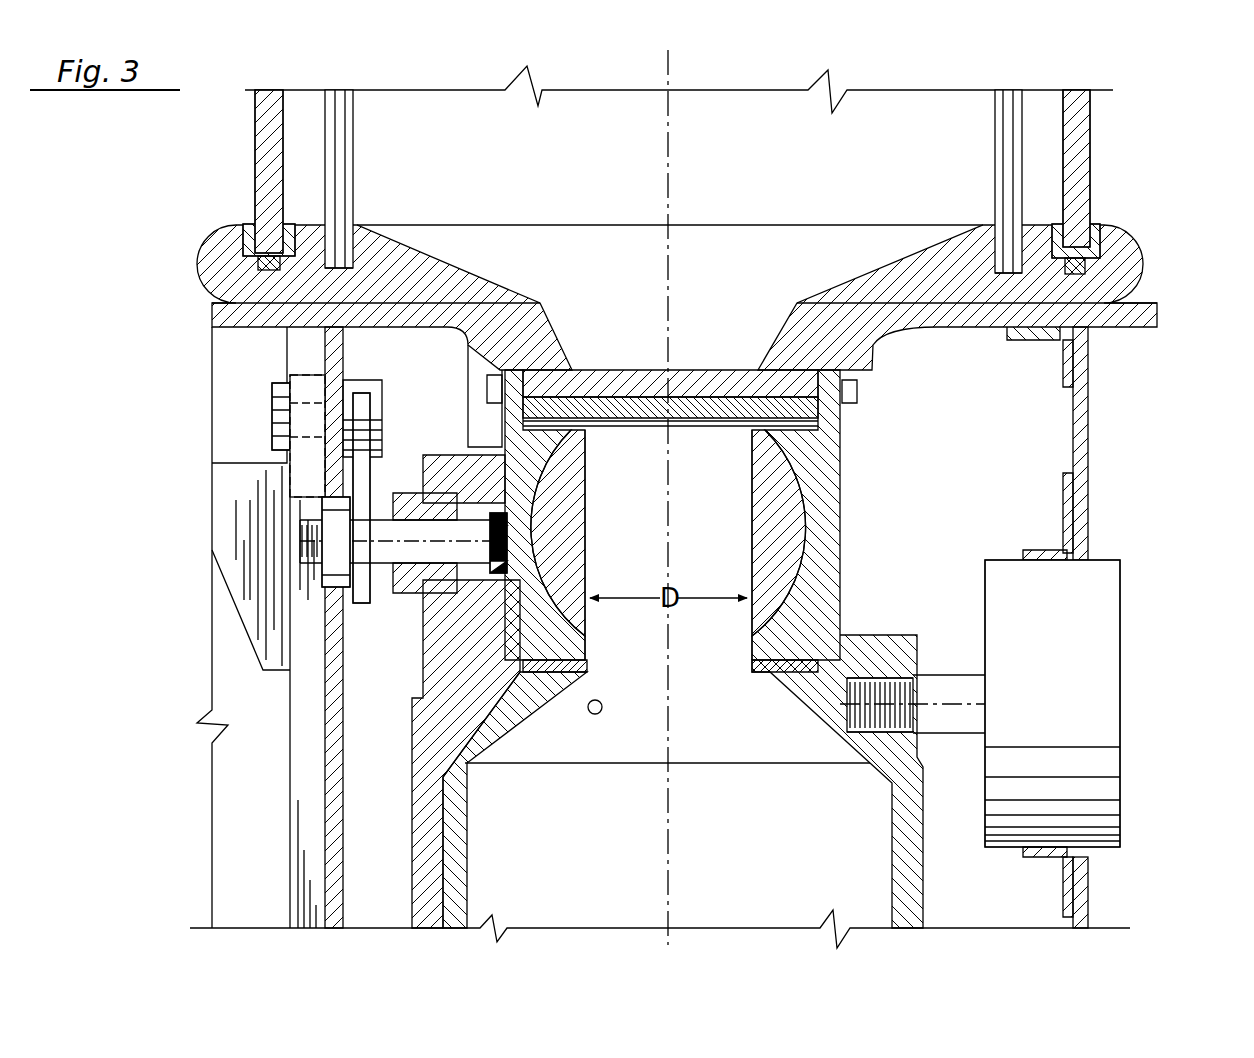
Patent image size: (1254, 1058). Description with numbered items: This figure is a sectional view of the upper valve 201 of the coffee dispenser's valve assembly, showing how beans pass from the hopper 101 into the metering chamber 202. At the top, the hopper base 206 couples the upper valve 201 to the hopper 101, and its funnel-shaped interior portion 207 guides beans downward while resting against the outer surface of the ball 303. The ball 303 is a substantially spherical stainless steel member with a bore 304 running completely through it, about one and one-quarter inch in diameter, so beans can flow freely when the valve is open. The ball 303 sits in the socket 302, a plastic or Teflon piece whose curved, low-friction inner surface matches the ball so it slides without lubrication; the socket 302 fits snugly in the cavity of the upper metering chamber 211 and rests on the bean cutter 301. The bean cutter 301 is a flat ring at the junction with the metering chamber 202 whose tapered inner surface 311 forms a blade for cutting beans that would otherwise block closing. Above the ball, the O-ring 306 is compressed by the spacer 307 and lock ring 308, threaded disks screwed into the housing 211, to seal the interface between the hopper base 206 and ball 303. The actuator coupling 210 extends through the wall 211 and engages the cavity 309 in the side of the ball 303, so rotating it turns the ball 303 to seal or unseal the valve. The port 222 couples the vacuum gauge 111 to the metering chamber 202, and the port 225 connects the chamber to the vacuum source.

The hopper 101 is at (1090, 168).
The vacuum gauge 111 is at (1120, 630).
The upper valve 201 is at (186, 394).
The metering chamber 202 is at (773, 862).
The hopper base 206 is at (1143, 262).
The funnel-shaped interior portion 207 is at (767, 279).
The actuator coupling 210 is at (382, 530).
The upper metering chamber 211 is at (437, 635).
The port 222 is at (955, 672).
The port 225 is at (595, 714).
The bean cutter 301 is at (778, 680).
The socket 302 is at (825, 600).
The ball 303 is at (822, 515).
The bore 304 is at (653, 542).
The O-ring 306 is at (822, 424).
The spacer 307 is at (825, 413).
The lock ring 308 is at (847, 380).
The cavity 309 is at (533, 494).
The tapered inner surface 311 is at (590, 668).